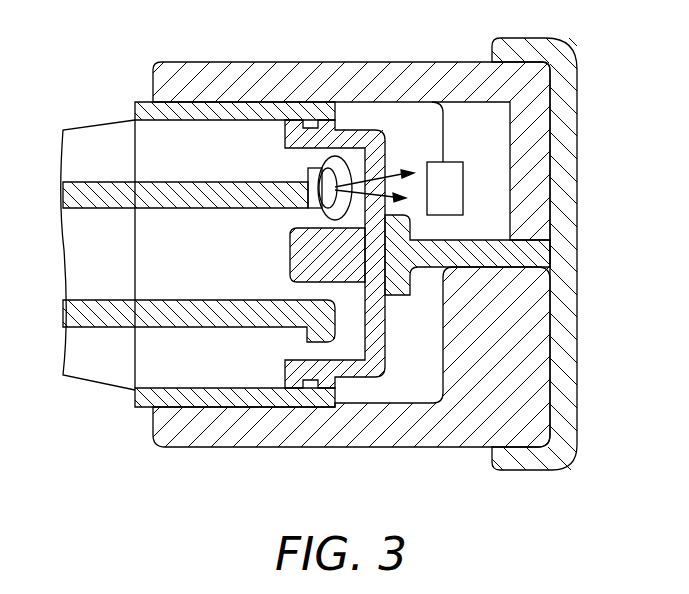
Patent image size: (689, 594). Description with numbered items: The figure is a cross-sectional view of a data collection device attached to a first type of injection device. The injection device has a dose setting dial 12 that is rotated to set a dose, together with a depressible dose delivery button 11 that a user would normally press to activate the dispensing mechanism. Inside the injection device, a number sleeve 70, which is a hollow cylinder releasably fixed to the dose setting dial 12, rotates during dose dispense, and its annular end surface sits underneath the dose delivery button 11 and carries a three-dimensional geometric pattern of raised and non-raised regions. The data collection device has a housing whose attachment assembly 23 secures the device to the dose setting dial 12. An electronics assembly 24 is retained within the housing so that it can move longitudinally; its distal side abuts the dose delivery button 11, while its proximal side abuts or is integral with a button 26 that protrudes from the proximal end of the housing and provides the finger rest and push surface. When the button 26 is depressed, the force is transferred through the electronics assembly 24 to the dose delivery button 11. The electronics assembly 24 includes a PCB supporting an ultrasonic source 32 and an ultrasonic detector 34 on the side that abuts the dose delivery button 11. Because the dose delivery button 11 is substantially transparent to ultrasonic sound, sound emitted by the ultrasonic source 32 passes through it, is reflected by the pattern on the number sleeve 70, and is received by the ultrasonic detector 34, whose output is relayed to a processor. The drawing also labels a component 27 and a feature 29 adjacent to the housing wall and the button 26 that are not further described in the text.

The dose delivery button 11 is at (385, 342).
The dose setting dial 12 is at (196, 396).
The attachment assembly 23 is at (226, 443).
The electronics assembly 24 is at (481, 112).
The button 26 is at (572, 250).
The seal band 27 is at (425, 267).
The gap 29 is at (552, 236).
The ultrasonic source 32 is at (419, 158).
The ultrasonic detector 34 is at (433, 160).
The number sleeve 70 is at (318, 167).